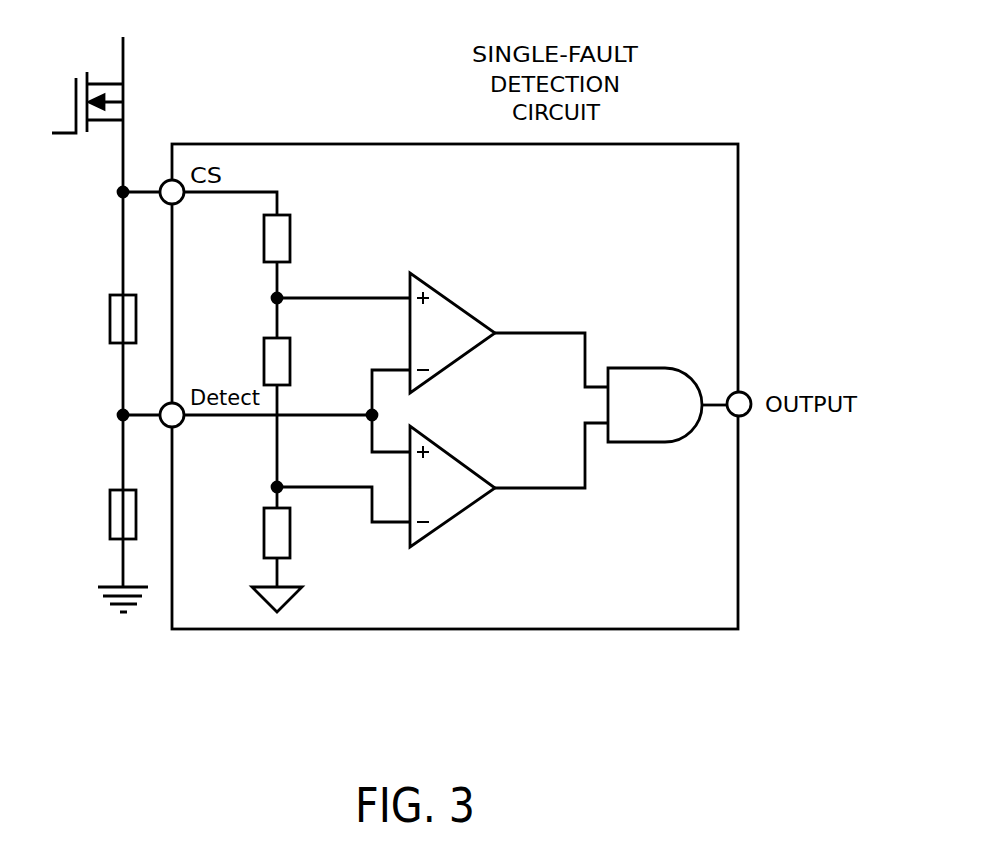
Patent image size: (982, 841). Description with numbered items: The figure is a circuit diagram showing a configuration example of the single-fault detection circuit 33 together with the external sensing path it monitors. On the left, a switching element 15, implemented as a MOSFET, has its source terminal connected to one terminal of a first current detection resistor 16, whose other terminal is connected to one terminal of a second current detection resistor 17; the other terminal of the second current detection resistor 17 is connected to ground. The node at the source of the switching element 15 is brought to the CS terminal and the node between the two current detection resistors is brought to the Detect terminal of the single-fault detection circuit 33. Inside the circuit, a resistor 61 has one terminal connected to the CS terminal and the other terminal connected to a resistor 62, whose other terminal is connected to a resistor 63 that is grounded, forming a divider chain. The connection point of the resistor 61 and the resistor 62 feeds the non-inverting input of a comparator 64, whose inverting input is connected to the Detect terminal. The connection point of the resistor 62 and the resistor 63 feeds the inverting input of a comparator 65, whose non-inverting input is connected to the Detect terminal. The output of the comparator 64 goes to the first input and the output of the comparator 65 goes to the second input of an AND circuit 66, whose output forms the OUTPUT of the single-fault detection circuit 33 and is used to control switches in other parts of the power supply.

The switching element 15 is at (127, 92).
The first current detection resistor 16 is at (110, 315).
The second current detection resistor 17 is at (110, 509).
The single-fault detection circuit 33 is at (428, 143).
The resistor 61 is at (291, 240).
The resistor 62 is at (291, 357).
The resistor 63 is at (291, 542).
The comparator 64 is at (462, 305).
The comparator 65 is at (462, 458).
The AND circuit 66 is at (653, 367).